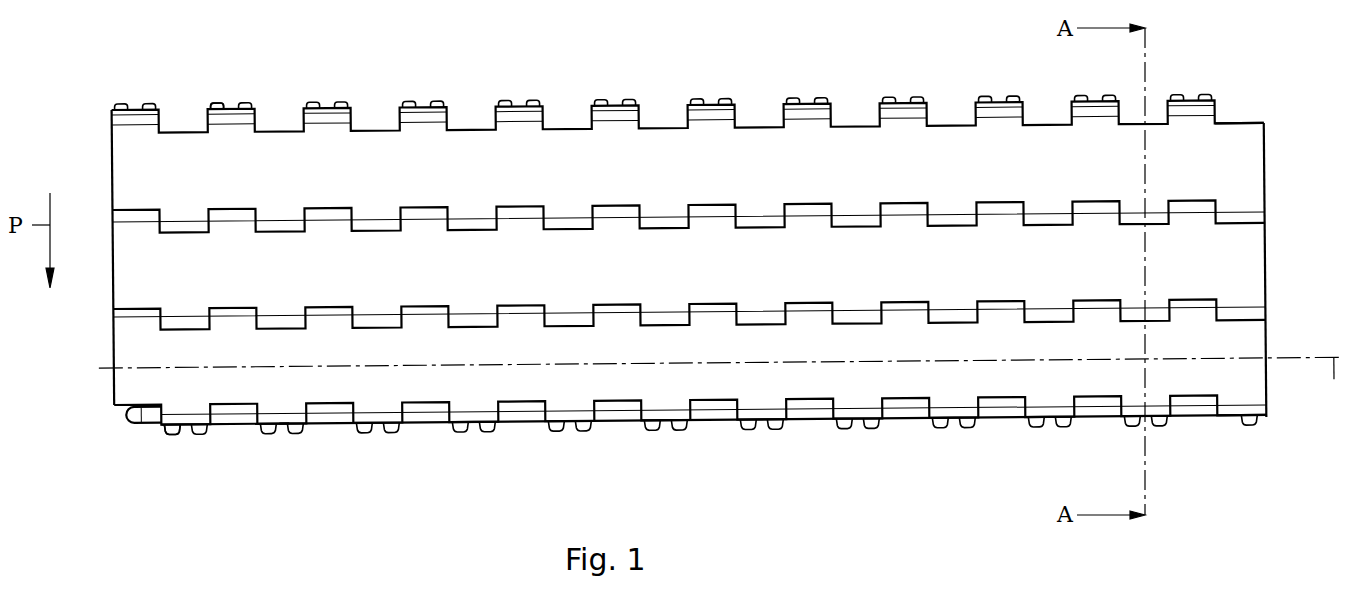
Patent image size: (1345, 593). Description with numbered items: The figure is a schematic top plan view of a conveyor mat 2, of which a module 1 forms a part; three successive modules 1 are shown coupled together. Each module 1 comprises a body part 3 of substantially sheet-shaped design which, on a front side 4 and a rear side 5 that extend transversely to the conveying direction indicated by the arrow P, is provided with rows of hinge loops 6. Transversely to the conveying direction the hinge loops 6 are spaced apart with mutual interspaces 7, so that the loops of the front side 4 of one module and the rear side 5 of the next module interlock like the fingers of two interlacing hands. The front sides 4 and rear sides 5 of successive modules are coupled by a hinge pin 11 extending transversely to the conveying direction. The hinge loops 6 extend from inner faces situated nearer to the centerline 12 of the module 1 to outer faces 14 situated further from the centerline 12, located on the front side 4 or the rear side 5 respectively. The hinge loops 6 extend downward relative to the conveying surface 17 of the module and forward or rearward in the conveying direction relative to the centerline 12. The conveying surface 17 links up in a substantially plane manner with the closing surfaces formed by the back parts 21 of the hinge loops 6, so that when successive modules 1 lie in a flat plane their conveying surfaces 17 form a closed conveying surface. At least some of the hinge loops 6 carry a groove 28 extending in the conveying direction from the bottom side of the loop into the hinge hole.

The module 1 is at (1301, 259).
The conveyor mat 2 is at (99, 460).
The body part 3 is at (128, 148).
The front side 4 is at (525, 402).
The rear side 5 is at (472, 130).
The hinge loops 6 is at (622, 115).
The mutual interspaces 7 is at (377, 120).
The hinge pin 11 is at (728, 410).
The centerline 12 is at (722, 386).
The outer faces 14 is at (217, 104).
The conveying surface 17 is at (248, 184).
The back parts 21 is at (950, 397).
The groove 28 is at (282, 432).